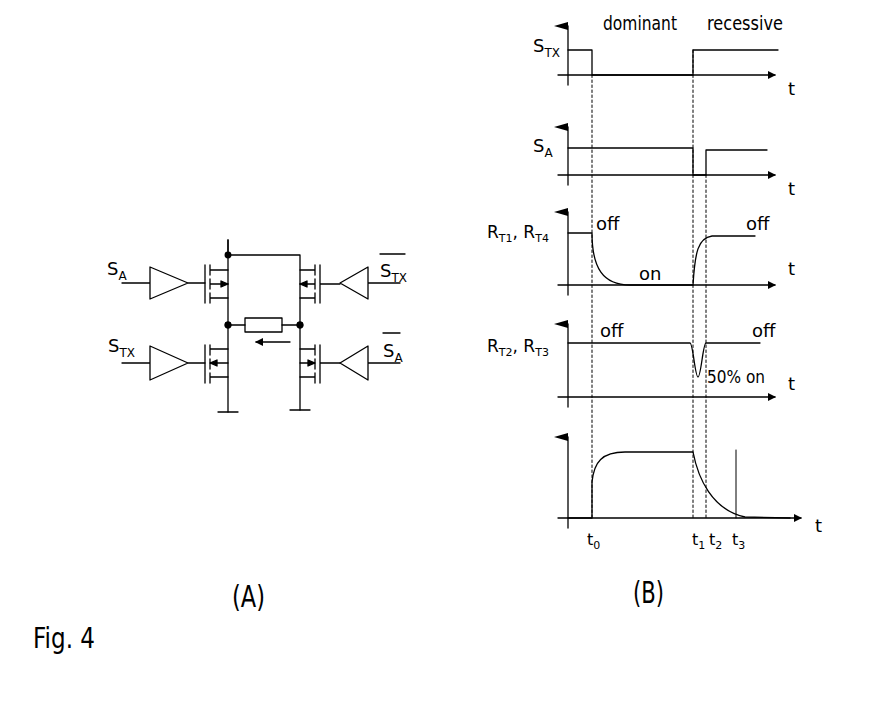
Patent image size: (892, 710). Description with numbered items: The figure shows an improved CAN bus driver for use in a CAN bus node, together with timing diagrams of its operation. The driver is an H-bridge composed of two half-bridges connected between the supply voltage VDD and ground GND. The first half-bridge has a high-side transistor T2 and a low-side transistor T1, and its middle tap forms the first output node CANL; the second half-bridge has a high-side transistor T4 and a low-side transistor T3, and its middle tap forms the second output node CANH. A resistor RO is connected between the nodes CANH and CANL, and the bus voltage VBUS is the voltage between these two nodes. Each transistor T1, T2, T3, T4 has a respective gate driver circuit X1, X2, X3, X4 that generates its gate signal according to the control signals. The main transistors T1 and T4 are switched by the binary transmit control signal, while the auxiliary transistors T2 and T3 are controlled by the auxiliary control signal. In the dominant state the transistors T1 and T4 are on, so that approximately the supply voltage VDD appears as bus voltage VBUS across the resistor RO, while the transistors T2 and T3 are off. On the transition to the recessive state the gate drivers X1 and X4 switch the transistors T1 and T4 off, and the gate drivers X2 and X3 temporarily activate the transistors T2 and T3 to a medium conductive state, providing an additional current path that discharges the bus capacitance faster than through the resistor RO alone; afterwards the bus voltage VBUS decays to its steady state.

In FIG. 4A, the low-side transistor T1 is at (207, 375).
In FIG. 4A, the high-side transistor T2 is at (207, 273).
In FIG. 4A, the low-side transistor T3 is at (321, 375).
In FIG. 4A, the high-side transistor T4 is at (320, 272).
In FIG. 4A, the gate driver circuit X1 is at (163, 376).
In FIG. 4A, the gate driver circuit X2 is at (163, 271).
In FIG. 4A, the gate driver circuit X3 is at (370, 376).
In FIG. 4A, the gate driver circuit X4 is at (370, 269).
In FIG. 4A, the resistor RO is at (264, 313).
In FIG. 4A, the supply voltage VDD is at (241, 235).
In FIG. 4A, the ground GND is at (264, 420).
In FIG. 4A, the first output node CANL is at (228, 325).
In FIG. 4A, the second output node CANH is at (300, 325).
In FIG. 4A, the bus voltage VBUS is at (267, 360).
In FIG. 4B, the bus voltage VBUS is at (663, 474).